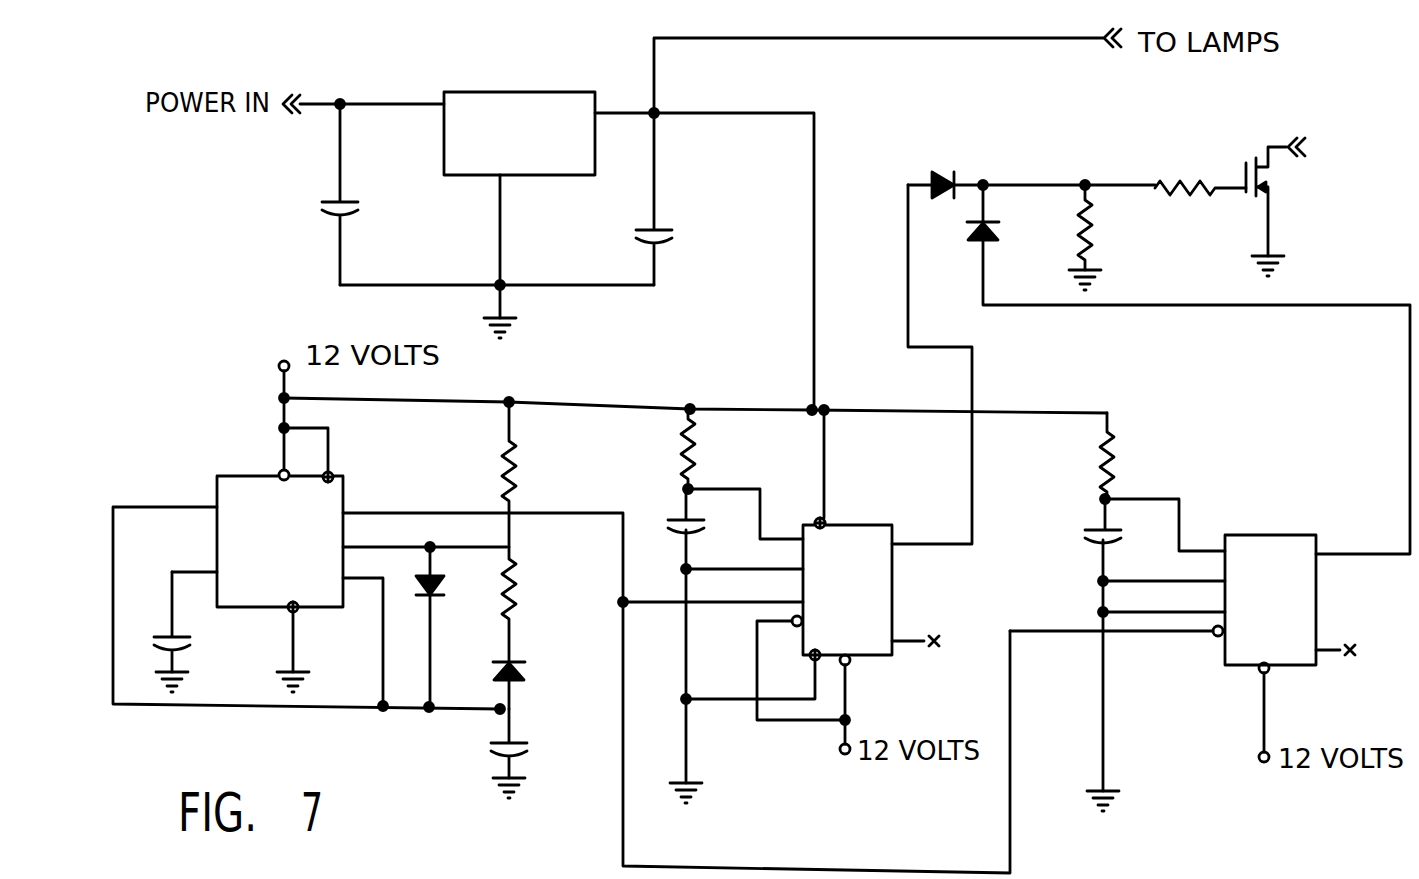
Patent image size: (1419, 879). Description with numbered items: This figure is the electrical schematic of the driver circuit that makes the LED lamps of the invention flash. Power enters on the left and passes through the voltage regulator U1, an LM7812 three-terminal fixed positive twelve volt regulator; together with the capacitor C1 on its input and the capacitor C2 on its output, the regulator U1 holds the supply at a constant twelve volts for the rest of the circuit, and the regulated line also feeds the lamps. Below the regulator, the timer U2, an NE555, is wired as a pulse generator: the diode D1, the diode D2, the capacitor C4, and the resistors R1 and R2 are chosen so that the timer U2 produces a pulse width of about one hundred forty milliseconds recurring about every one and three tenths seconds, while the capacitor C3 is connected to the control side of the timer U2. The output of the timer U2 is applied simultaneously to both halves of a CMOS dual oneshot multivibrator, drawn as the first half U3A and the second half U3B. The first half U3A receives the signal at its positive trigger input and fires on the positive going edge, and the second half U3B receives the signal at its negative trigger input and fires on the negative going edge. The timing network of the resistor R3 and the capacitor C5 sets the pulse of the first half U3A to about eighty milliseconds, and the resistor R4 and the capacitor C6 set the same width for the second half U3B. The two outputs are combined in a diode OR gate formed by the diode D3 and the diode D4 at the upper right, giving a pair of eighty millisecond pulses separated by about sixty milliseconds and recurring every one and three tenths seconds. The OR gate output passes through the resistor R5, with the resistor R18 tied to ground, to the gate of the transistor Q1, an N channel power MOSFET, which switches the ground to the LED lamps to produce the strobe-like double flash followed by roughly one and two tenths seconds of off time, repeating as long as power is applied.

The voltage regulator U1 is at (490, 92).
The capacitor C1 is at (330, 202).
The capacitor C2 is at (663, 234).
The diode D3 is at (929, 180).
The diode D4 is at (981, 238).
The resistor R5 is at (1190, 188).
The resistor R18 is at (1096, 232).
The transistor Q1 is at (1271, 186).
The timer U2 is at (232, 475).
The capacitor C3 is at (164, 636).
The resistor R1 is at (493, 470).
The diode D1 is at (436, 576).
The resistor R2 is at (516, 586).
The diode D2 is at (511, 660).
The capacitor C4 is at (489, 748).
The resistor R3 is at (680, 448).
The capacitor C5 is at (694, 518).
The first half of dual oneshot multivibrator U3A is at (842, 523).
The resistor R4 is at (1099, 458).
The capacitor C6 is at (1094, 532).
The second half of dual oneshot multivibrator U3B is at (1242, 535).